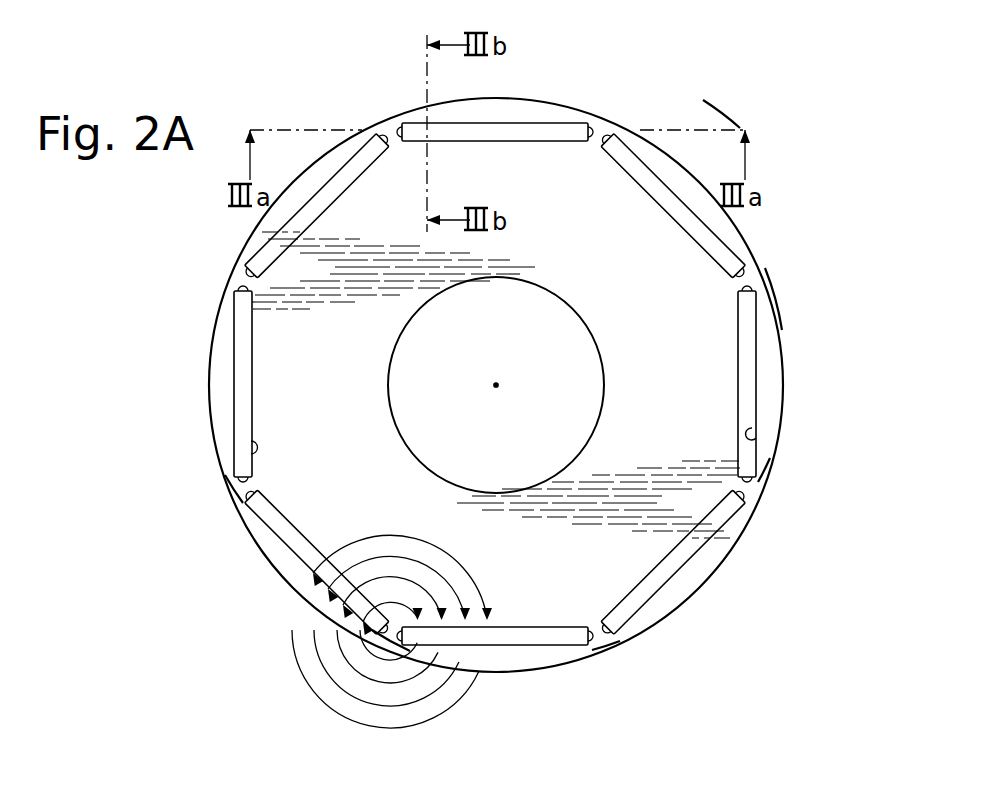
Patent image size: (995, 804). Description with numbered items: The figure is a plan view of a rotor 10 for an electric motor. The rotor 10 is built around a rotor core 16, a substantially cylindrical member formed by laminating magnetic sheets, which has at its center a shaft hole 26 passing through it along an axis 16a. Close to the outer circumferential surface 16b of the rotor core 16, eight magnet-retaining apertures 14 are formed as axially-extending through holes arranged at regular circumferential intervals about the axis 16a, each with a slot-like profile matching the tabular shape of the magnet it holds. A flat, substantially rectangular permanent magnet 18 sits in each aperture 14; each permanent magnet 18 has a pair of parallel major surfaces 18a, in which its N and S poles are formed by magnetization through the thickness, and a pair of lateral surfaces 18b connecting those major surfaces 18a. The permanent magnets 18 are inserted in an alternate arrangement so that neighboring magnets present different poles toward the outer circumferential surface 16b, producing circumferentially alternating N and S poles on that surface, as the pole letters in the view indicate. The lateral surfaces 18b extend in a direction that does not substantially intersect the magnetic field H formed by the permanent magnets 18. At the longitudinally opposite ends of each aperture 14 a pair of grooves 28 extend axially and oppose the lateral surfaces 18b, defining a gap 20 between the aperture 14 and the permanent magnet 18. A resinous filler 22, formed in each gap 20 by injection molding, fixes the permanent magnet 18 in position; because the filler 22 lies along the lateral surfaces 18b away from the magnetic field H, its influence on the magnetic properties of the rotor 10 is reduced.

The rotor 10 is at (708, 98).
The magnet-retaining aperture 14 is at (756, 438).
The rotor core 16 is at (362, 126).
The axis 16a is at (499, 387).
The outer circumferential surface 16b is at (766, 268).
The permanent magnet 18 is at (240, 336).
The major surface 18a is at (250, 454).
The lateral surface 18b is at (382, 638).
The gap 20 is at (603, 638).
The resinous filler 22 is at (757, 489).
The shaft hole 26 is at (520, 279).
The groove 28 is at (242, 490).
The magnetic field H is at (392, 631).